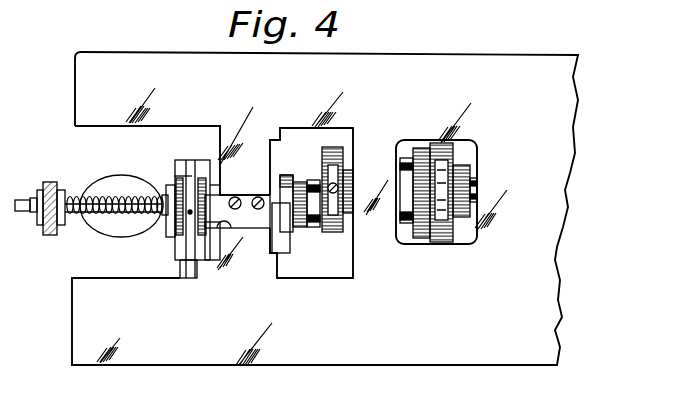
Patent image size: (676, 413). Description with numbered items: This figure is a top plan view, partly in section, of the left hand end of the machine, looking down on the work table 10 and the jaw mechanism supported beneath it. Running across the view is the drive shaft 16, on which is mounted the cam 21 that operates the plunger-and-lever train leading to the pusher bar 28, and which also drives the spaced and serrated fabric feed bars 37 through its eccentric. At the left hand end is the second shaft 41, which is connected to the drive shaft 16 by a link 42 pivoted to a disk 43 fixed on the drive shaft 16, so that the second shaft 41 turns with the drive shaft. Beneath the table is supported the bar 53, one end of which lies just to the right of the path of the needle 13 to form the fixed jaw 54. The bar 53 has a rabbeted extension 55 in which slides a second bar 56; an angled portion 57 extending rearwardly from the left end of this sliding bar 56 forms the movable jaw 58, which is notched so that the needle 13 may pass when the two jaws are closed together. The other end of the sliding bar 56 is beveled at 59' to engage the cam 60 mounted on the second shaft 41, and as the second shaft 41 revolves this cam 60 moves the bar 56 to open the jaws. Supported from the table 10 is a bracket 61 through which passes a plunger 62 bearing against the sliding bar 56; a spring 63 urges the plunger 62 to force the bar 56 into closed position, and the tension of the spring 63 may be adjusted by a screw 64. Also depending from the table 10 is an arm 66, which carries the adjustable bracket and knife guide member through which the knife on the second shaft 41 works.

The work table 10 is at (571, 107).
The needle 13 is at (177, 236).
The drive shaft 16 is at (477, 186).
The cam 21 is at (440, 245).
The pusher bar 28 is at (191, 272).
The fabric feed bars 37 is at (174, 176).
The second shaft 41 is at (303, 182).
The link 42 is at (318, 177).
The disk 43 is at (343, 170).
The bar 53 is at (246, 195).
The fixed jaw 54 is at (224, 182).
The rabbeted extension 55 is at (251, 228).
The bar 56 is at (222, 222).
The angled portion 57 is at (168, 185).
The movable jaw 58 is at (197, 183).
The beveled end 59' is at (300, 216).
The cam 60 is at (285, 252).
The bracket 61 is at (50, 182).
The plunger 62 is at (150, 218).
The spring 63 is at (123, 215).
The screw 64 is at (160, 221).
The arm 66 is at (83, 227).